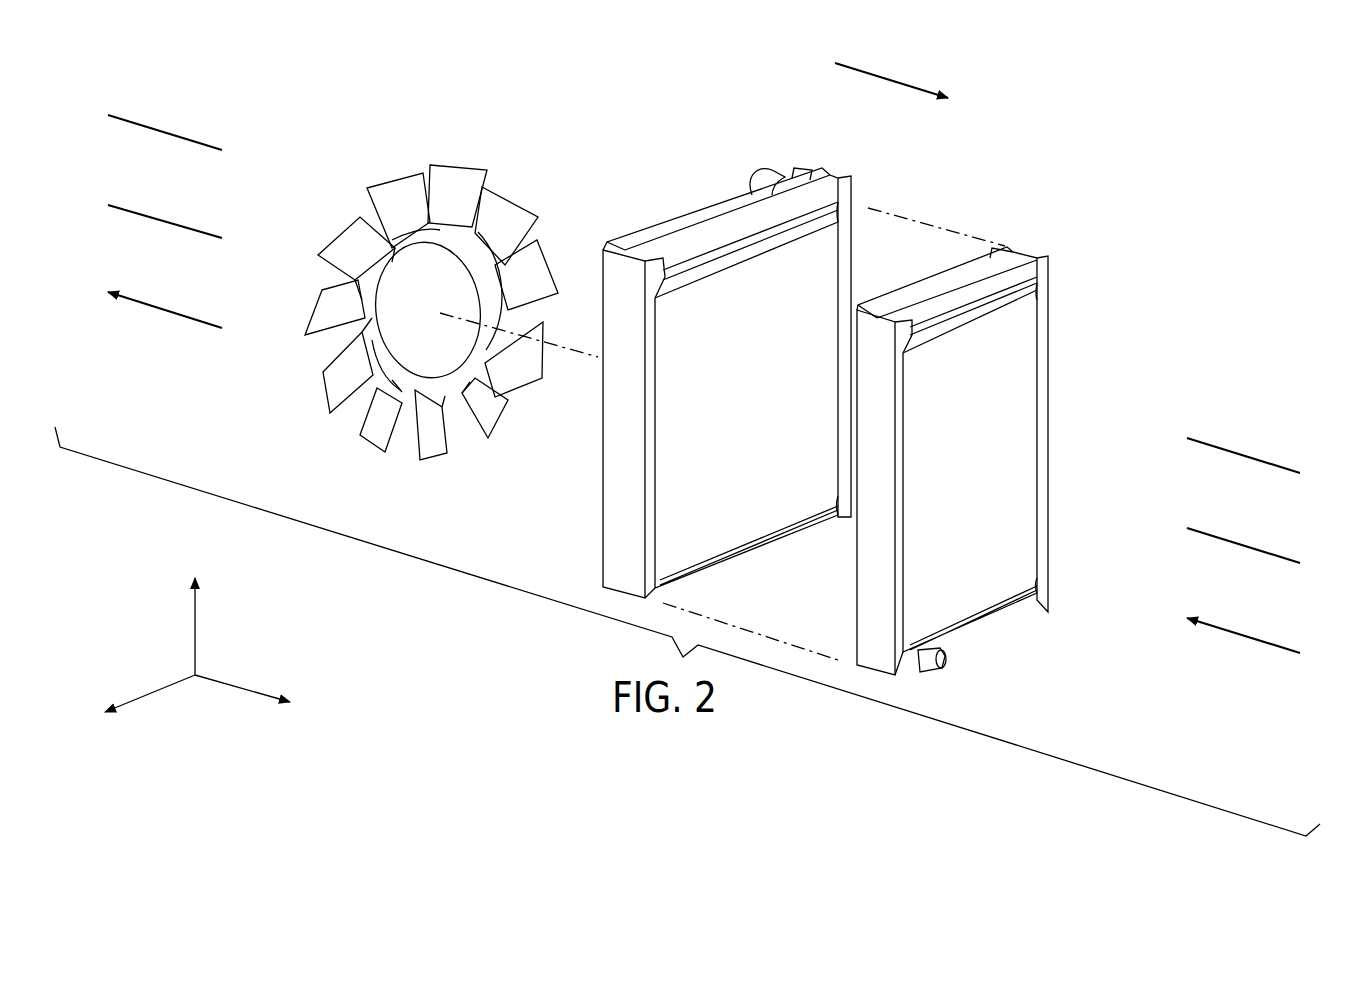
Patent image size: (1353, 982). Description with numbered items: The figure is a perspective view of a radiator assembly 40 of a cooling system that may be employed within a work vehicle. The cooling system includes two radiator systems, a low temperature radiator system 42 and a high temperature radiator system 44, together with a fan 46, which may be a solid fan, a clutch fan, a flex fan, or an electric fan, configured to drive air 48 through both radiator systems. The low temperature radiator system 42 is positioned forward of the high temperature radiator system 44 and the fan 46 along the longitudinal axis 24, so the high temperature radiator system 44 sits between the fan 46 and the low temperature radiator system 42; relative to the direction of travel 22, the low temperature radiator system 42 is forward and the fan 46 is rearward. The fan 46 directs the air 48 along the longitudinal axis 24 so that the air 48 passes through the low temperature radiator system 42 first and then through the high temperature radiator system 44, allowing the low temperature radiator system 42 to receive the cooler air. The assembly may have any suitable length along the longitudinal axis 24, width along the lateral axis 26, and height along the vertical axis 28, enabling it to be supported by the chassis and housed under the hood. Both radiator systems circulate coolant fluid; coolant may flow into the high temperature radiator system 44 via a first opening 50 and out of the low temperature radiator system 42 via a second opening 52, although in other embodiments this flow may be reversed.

The direction of travel 22 is at (888, 80).
The longitudinal axis 24 is at (235, 688).
The lateral axis 26 is at (137, 697).
The vertical axis 28 is at (196, 630).
The radiator assembly 40 is at (1098, 114).
The low temperature radiator system 42 is at (970, 448).
The high temperature radiator system 44 is at (757, 361).
The fan 46 is at (400, 188).
The air 48 is at (172, 130).
The first opening 50 is at (757, 175).
The second opening 52 is at (950, 662).